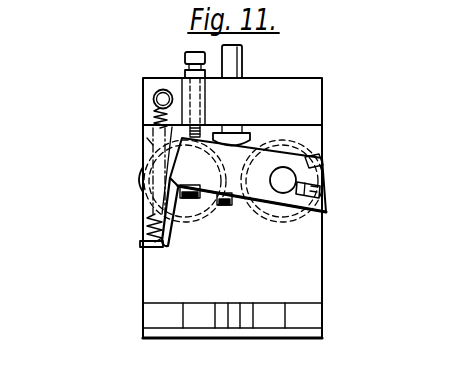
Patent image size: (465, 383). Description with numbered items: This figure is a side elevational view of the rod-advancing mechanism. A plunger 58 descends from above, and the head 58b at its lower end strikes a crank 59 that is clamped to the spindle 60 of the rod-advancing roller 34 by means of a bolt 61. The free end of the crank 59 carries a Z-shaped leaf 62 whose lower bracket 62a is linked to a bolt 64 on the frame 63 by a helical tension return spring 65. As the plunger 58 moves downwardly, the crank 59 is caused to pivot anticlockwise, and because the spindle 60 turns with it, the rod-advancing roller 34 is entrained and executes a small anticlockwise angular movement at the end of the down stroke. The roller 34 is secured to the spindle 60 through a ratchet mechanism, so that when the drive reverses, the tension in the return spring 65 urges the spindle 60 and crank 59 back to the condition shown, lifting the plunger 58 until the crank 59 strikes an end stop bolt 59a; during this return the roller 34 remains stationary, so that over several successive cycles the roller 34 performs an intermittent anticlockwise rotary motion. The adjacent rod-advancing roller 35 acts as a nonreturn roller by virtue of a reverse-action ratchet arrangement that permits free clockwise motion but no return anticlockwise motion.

The rod-advancing roller 34 is at (296, 218).
The rod-advancing roller 35 is at (142, 185).
The plunger 58 is at (237, 67).
The head 58b is at (232, 144).
The crank 59 is at (263, 192).
The end stop bolt 59a is at (185, 55).
The spindle 60 is at (285, 178).
The bolt 61 is at (323, 163).
The Z-shaped leaf 62 is at (168, 238).
The lower bracket 62a is at (145, 247).
The frame 63 is at (158, 283).
The bolt 64 is at (154, 96).
The helical tension return spring 65 is at (155, 122).